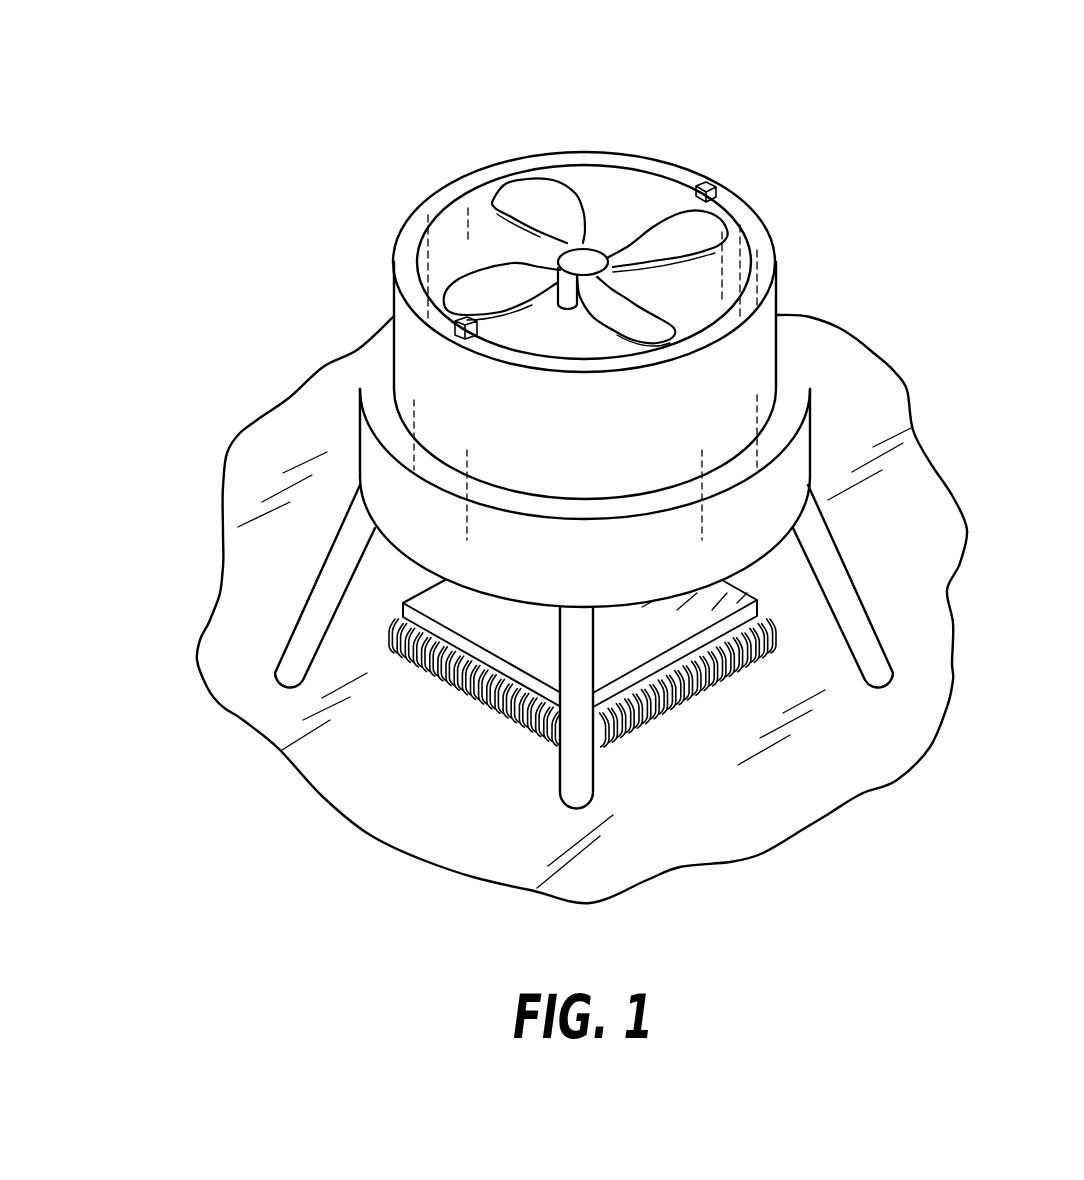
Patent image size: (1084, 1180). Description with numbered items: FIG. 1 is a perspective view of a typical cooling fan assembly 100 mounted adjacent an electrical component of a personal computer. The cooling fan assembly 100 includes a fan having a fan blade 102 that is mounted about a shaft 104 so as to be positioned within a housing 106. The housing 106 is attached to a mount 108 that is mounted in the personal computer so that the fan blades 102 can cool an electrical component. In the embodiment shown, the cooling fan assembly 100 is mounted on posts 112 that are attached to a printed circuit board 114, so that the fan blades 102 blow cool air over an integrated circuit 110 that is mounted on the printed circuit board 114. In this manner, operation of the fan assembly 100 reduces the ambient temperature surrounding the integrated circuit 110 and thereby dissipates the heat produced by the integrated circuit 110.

The cooling fan assembly 100 is at (383, 201).
The fan blade 102 is at (522, 200).
The shaft 104 is at (587, 263).
The housing 106 is at (683, 170).
The mount 108 is at (376, 468).
The integrated circuit 110 is at (498, 627).
The posts 112 is at (312, 612).
The printed circuit board 114 is at (253, 458).